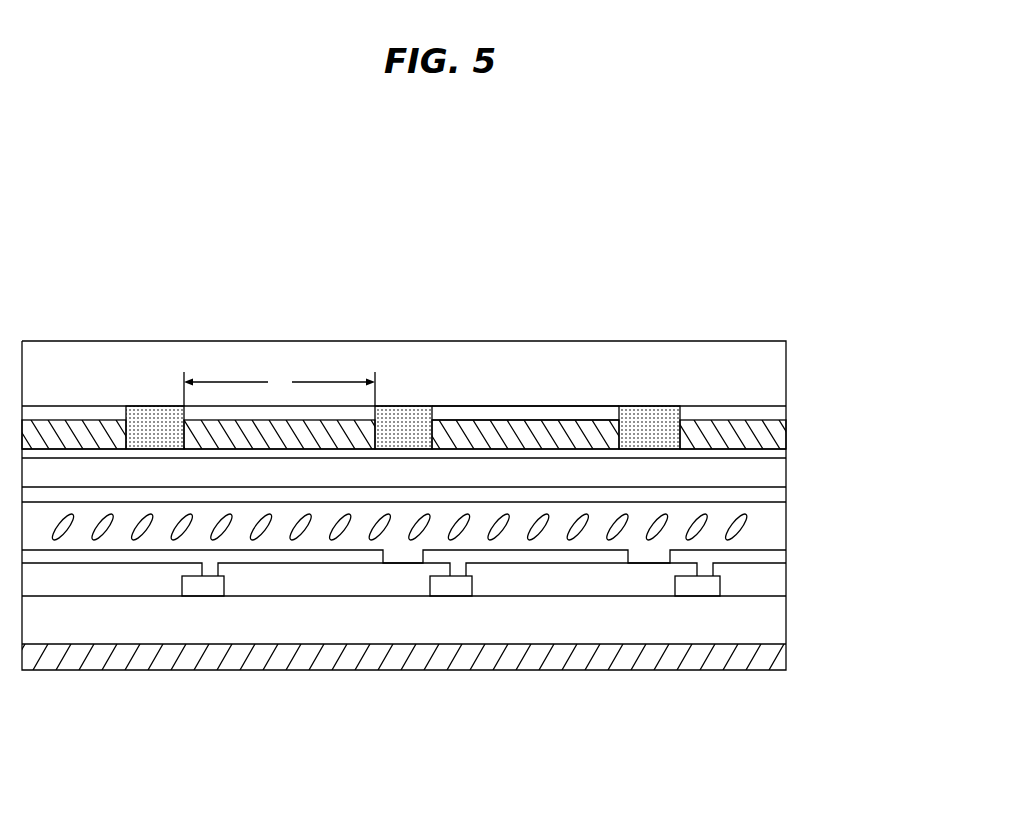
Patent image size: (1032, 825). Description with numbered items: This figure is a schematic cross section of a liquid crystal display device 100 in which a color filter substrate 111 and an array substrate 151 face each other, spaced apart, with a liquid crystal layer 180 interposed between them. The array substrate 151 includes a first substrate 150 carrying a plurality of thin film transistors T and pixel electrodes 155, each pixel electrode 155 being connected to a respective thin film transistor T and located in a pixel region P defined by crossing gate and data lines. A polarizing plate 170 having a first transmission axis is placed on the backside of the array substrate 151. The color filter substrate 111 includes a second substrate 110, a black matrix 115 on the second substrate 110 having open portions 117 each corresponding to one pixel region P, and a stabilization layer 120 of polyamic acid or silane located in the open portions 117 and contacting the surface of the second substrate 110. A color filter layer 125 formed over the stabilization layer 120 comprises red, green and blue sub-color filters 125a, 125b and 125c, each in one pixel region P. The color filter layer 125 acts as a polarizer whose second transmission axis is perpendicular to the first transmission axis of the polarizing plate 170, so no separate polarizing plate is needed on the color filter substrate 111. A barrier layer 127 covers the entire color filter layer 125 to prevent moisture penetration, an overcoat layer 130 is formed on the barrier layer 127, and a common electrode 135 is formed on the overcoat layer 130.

The liquid crystal display device 100 is at (619, 204).
The second substrate 110 is at (517, 383).
The color filter substrate 111 is at (857, 345).
The black matrix 115 is at (650, 422).
The open portions 117 is at (455, 416).
The stabilization layer 120 is at (583, 415).
The color filter layer 125 is at (398, 333).
The red sub-color filter 125a is at (302, 436).
The green sub-color filter 125b is at (760, 285).
The blue sub-color filter 125c is at (43, 432).
The barrier layer 127 is at (340, 455).
The overcoat layer 130 is at (773, 477).
The common electrode 135 is at (773, 498).
The first substrate 150 is at (517, 630).
The array substrate 151 is at (857, 557).
The pixel electrodes 155 is at (773, 560).
The polarizing plate 170 is at (773, 660).
The liquid crystal layer 180 is at (773, 530).
The thin film transistors T is at (448, 585).
The pixel regions P is at (279, 389).